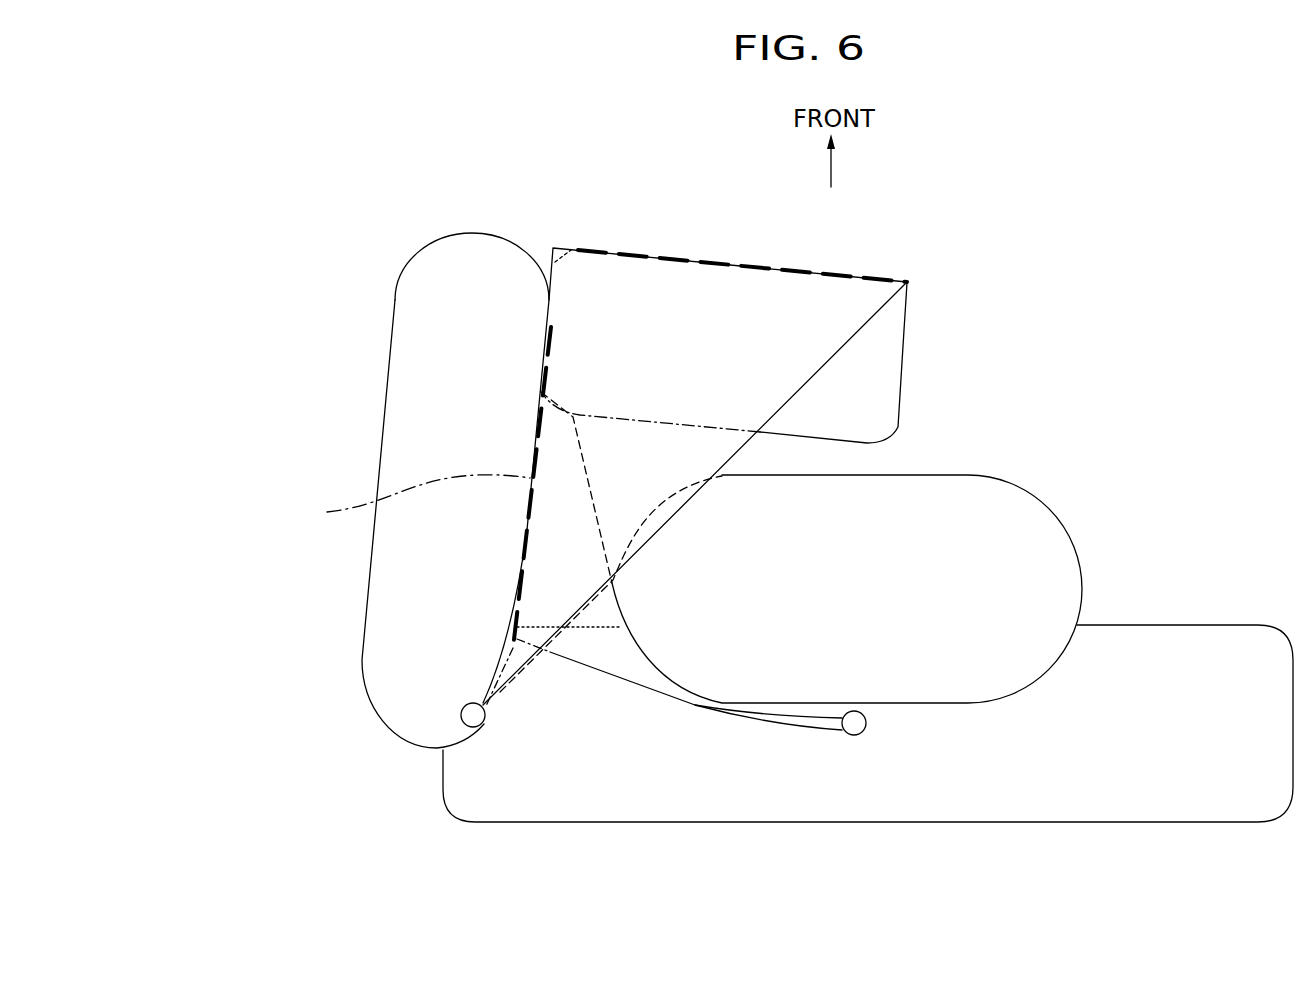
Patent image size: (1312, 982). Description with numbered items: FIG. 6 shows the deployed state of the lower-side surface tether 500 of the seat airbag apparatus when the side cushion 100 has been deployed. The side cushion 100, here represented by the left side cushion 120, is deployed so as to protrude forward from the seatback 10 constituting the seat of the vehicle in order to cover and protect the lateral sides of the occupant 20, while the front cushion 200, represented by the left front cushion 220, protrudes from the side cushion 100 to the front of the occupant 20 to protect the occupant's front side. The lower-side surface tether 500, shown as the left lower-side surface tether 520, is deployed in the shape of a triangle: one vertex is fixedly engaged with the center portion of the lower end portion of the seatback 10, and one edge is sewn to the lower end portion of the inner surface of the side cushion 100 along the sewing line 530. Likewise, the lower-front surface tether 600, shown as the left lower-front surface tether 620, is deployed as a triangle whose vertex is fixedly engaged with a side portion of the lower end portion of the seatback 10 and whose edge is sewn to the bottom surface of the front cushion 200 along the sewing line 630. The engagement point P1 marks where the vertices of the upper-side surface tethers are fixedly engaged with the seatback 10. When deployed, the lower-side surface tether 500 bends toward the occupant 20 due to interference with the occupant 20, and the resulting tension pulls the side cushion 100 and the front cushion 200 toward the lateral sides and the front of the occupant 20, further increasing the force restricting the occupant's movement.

The seatback 10 is at (1038, 788).
The occupant 20 is at (1057, 540).
The side cushion 100 is at (378, 490).
The left side cushion 120 is at (413, 377).
The front cushion 200 is at (789, 493).
The left front cushion 220 is at (885, 370).
The lower-side surface tether 500 is at (651, 708).
The left lower-side surface tether 520 is at (598, 643).
The sewing line 530 is at (327, 512).
The lower-front surface tether 600 is at (724, 346).
The left lower-front surface tether 620 is at (618, 293).
The sewing line 630 is at (708, 255).
The engagement point P1 is at (854, 735).